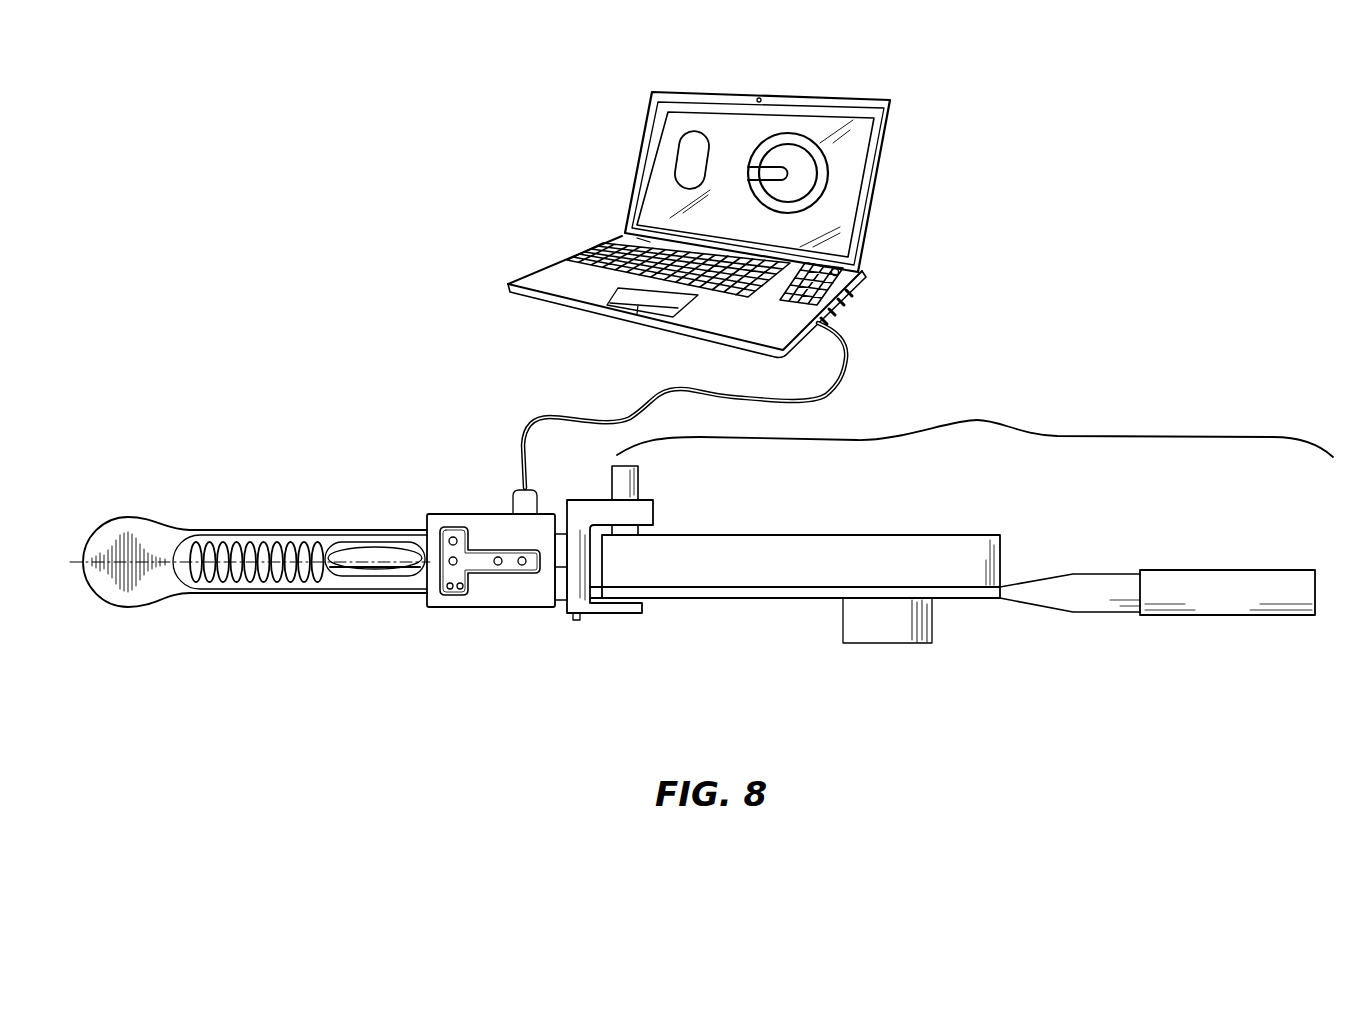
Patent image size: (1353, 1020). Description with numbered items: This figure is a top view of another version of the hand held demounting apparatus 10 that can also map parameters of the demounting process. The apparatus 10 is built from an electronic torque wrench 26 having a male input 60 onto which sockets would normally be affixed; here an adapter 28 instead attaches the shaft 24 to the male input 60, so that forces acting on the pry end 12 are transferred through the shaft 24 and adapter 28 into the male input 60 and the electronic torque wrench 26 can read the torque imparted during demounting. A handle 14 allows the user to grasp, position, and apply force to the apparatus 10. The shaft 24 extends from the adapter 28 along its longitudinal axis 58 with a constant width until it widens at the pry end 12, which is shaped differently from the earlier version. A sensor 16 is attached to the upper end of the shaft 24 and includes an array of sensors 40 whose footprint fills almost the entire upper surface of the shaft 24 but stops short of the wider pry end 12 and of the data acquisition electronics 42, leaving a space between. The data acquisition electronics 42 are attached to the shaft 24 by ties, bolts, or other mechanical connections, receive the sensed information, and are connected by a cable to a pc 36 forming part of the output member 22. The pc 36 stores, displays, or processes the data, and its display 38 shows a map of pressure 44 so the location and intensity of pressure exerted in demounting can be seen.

The apparatus 10 is at (211, 464).
The pry end 12 is at (142, 592).
The handle 14 is at (1212, 598).
The sensor 16 is at (287, 577).
The output member 22 is at (838, 225).
The shaft 24 is at (213, 593).
The electronic torque wrench 26 is at (977, 420).
The adapter 28 is at (605, 615).
The pc 36 is at (848, 93).
The display 38 is at (834, 170).
The array of sensors 40 is at (265, 546).
The data acquisition electronics 42 is at (500, 587).
The map of pressure 44 is at (690, 152).
The longitudinal axis 58 is at (123, 560).
The male input 60 is at (612, 482).